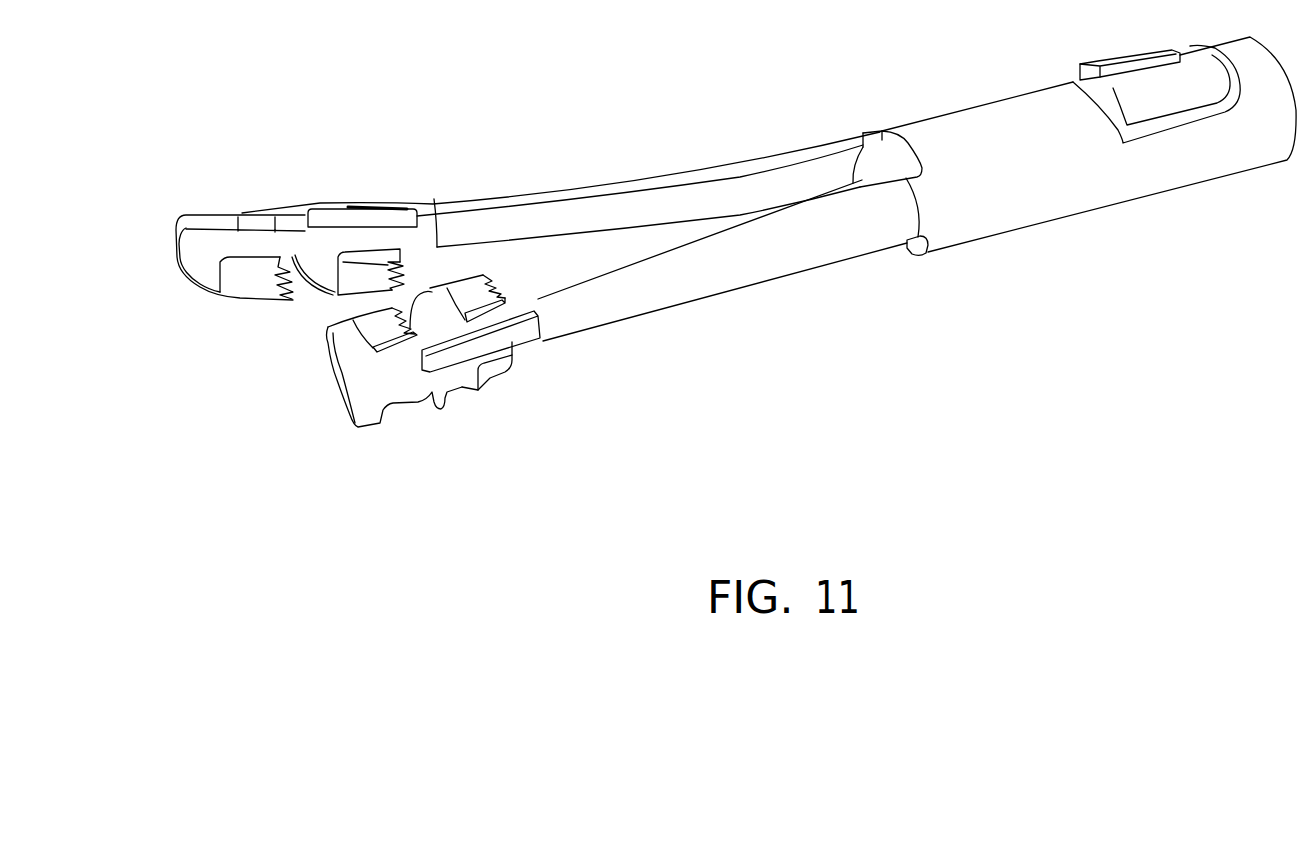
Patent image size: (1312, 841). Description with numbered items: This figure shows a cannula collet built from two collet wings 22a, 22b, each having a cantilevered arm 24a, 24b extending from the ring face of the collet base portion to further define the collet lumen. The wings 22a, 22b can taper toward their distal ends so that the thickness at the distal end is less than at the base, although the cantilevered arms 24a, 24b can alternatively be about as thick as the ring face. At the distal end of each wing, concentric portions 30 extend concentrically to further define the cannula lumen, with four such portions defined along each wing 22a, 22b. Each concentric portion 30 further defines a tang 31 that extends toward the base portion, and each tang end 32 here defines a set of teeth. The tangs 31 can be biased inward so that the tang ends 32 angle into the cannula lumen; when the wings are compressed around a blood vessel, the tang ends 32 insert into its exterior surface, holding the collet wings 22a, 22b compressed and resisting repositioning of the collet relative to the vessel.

The collet wing 22a is at (640, 167).
The collet wing 22b is at (705, 308).
The cantilevered arm 24a is at (827, 123).
The cantilevered arm 24b is at (875, 268).
The concentric portion 30 is at (177, 282).
The tang 31 is at (362, 255).
The tang end 32 is at (403, 258).